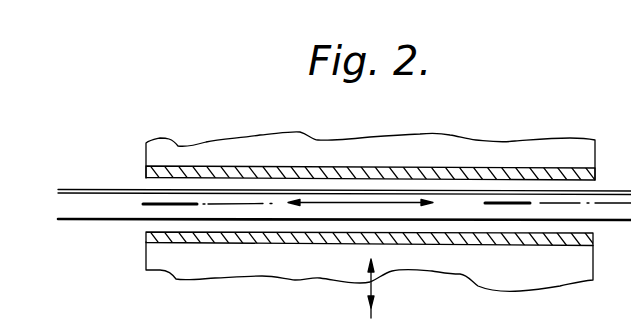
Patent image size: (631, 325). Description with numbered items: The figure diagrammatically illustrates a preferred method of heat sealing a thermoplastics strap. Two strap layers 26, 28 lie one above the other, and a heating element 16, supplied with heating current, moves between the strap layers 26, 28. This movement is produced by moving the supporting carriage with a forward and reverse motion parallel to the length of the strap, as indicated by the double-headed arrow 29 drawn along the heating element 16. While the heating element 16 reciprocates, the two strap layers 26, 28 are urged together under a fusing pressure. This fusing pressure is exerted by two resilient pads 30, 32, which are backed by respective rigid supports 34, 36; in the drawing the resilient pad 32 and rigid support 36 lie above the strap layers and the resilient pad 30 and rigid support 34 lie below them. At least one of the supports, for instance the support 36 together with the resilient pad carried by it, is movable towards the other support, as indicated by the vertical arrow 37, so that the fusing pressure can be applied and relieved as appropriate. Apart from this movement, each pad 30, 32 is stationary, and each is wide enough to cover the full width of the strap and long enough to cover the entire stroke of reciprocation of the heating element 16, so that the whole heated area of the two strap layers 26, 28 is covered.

The heating element 16 is at (167, 205).
The strap layer 26 is at (103, 189).
The strap layer 28 is at (118, 220).
The arrow 29 is at (357, 202).
The resilient pad 30 is at (520, 239).
The resilient pad 32 is at (540, 175).
The rigid support 34 is at (150, 258).
The rigid support 36 is at (161, 158).
The arrow 37 is at (372, 284).